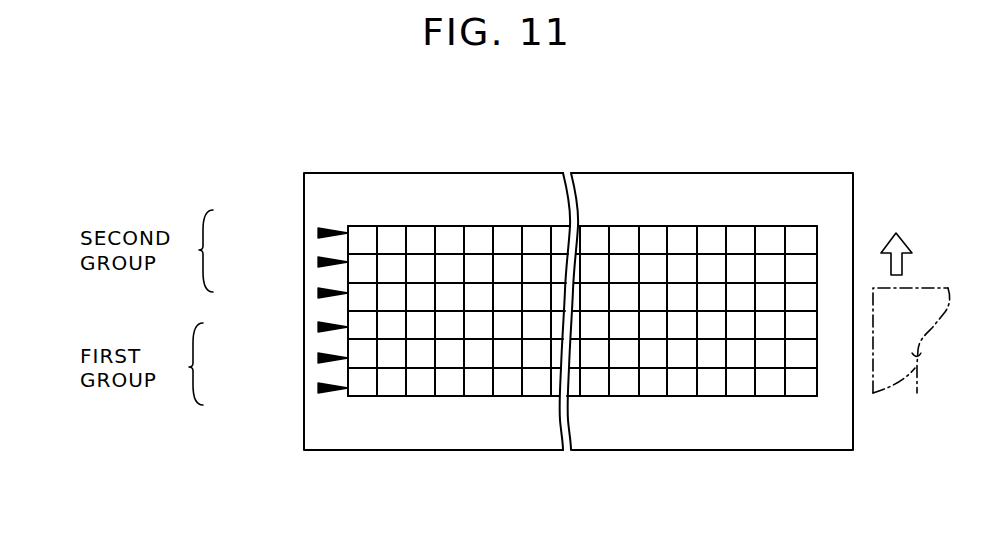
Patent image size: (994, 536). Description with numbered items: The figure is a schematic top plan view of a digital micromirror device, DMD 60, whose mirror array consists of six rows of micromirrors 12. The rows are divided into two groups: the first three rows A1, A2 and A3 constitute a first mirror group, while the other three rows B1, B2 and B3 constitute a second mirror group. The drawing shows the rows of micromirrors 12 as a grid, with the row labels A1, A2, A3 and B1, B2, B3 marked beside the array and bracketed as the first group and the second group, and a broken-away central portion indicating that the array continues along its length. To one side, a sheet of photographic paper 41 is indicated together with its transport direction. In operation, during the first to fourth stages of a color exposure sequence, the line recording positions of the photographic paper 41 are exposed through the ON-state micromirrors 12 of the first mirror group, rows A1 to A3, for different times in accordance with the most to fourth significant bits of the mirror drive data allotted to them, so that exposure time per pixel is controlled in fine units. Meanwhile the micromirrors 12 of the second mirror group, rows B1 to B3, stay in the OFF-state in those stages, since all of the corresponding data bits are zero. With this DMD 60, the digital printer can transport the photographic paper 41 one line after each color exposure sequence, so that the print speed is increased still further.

The DMD 60 is at (470, 150).
The micromirrors 12 is at (450, 388).
The photographic paper 41 is at (918, 395).
The sixth row of micromirrors B3 is at (322, 233).
The fifth row of micromirrors B2 is at (322, 262).
The fourth row of micromirrors B1 is at (322, 293).
The third row of micromirrors A3 is at (322, 327).
The second row of micromirrors A2 is at (322, 358).
The first row of micromirrors A1 is at (322, 388).